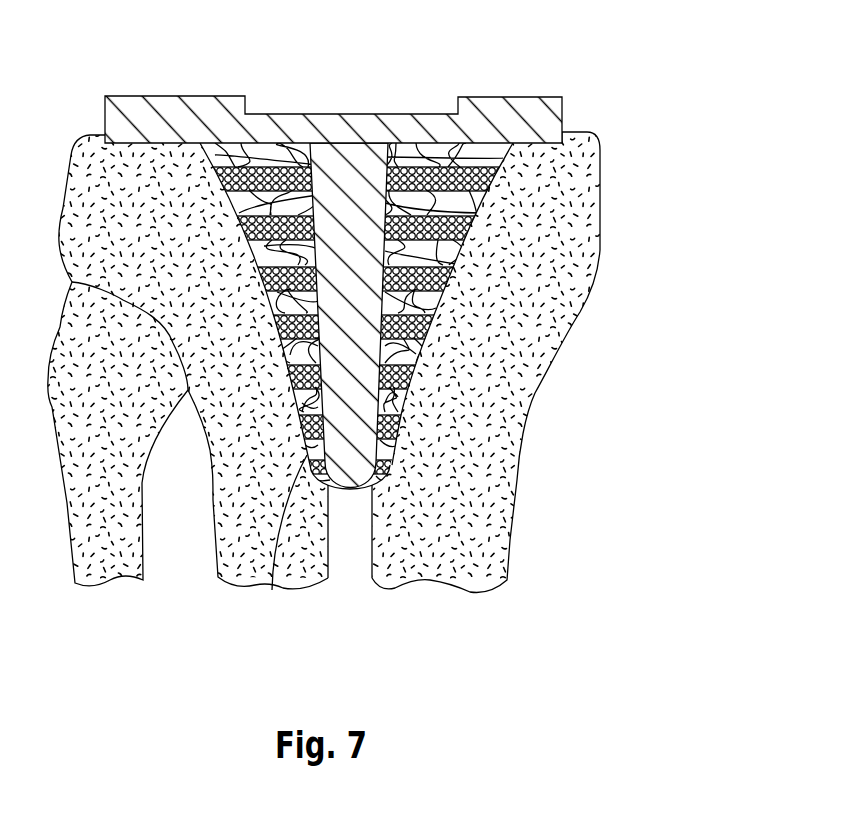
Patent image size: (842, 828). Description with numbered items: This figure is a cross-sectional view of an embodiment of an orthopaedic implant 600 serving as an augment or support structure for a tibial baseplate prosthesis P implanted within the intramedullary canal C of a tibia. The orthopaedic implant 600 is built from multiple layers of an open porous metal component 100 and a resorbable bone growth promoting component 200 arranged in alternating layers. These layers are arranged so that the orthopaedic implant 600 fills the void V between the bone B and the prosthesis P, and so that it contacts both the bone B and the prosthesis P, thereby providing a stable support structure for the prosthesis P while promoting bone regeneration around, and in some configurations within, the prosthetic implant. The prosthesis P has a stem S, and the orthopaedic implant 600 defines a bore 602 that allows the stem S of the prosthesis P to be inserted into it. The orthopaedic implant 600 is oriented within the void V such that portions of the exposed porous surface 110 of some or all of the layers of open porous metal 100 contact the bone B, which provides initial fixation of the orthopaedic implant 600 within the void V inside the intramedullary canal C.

The prosthesis P is at (490, 107).
The stem S is at (350, 217).
The bone B is at (513, 383).
The open porous metal component 100 is at (453, 278).
The exposed porous surface 110 is at (478, 252).
The resorbable bone growth promoting component 200 is at (442, 303).
The orthopaedic implant 600 is at (491, 225).
The bore 602 is at (372, 466).
The intramedullary canal C is at (352, 568).
The void V is at (272, 590).